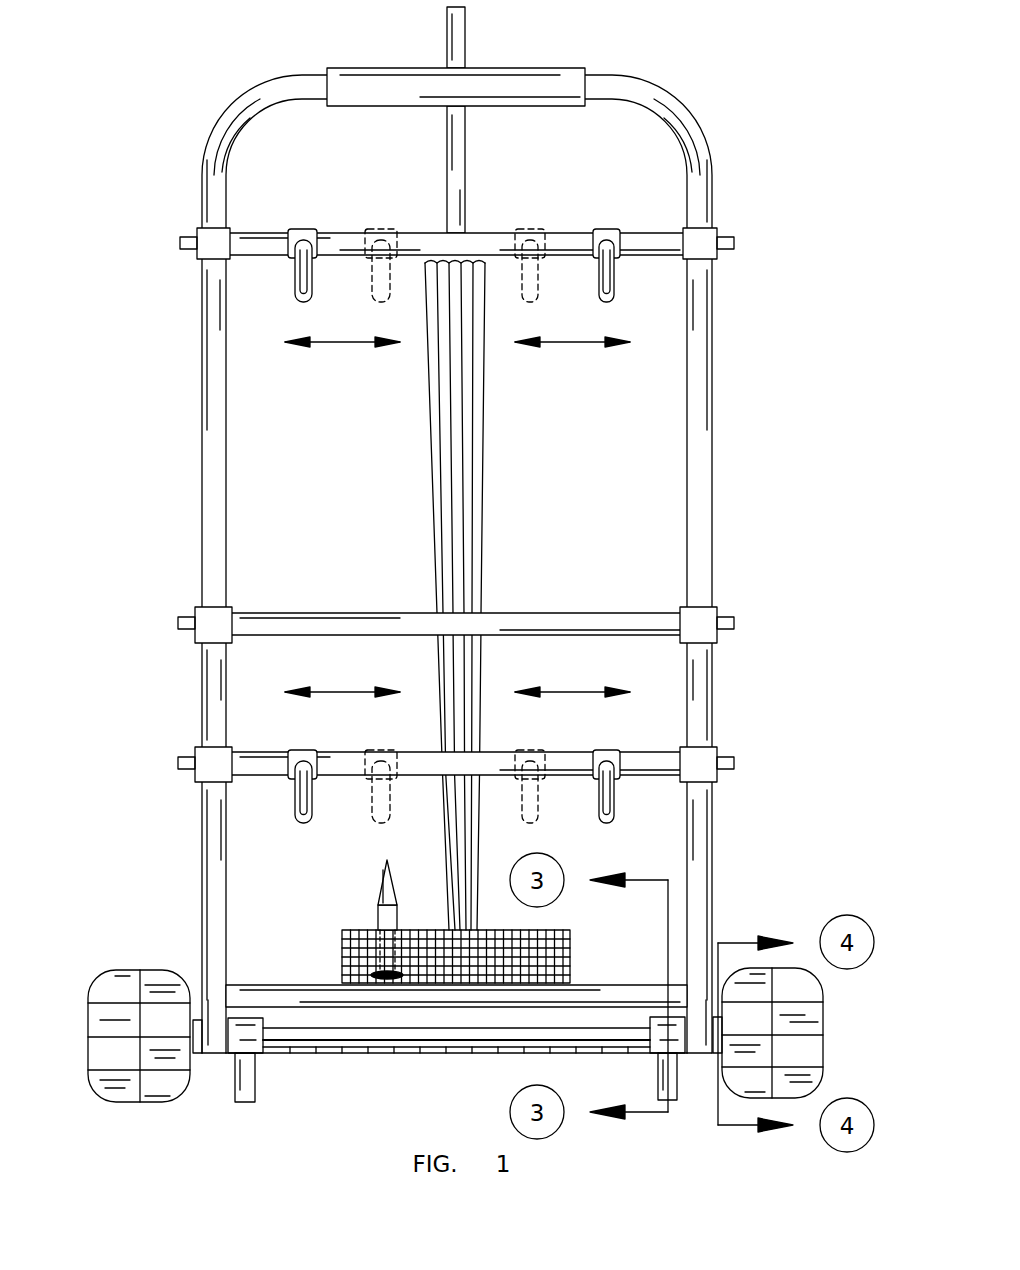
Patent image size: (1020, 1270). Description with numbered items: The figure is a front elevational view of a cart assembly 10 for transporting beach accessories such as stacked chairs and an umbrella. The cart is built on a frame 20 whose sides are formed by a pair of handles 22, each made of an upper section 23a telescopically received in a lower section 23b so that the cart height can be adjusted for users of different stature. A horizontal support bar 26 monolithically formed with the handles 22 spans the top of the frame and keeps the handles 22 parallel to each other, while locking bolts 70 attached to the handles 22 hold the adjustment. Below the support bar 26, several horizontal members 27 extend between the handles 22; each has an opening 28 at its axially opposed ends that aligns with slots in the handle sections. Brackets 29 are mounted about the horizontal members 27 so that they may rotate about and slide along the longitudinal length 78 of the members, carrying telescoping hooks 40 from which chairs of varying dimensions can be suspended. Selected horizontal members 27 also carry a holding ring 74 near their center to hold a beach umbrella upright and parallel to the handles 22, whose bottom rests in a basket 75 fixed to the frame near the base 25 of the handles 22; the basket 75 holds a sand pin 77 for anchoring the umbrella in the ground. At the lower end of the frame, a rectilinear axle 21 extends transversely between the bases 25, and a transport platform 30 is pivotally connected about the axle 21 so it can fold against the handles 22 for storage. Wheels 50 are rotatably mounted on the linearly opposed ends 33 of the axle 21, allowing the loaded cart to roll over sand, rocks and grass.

The cart assembly 10 is at (812, 93).
The frame 20 is at (245, 518).
The axle 21 is at (293, 1036).
The handles 22 is at (487, 564).
The upper section 23a is at (214, 325).
The lower section 23b is at (212, 860).
The base 25 is at (215, 1045).
The horizontal support bar 26 is at (345, 76).
The horizontal members 27 is at (647, 243).
The opening 28 is at (205, 259).
The bracket 29 is at (298, 233).
The transport platform 30 is at (425, 1112).
The linearly opposed ends 33 is at (195, 1023).
The hooks 40 is at (484, 540).
The wheels 50 is at (115, 975).
The locking bolts 70 is at (180, 243).
The holding ring 74 is at (468, 247).
The basket 75 is at (340, 968).
The sand pin 77 is at (380, 912).
The longitudinal length 78 is at (346, 345).